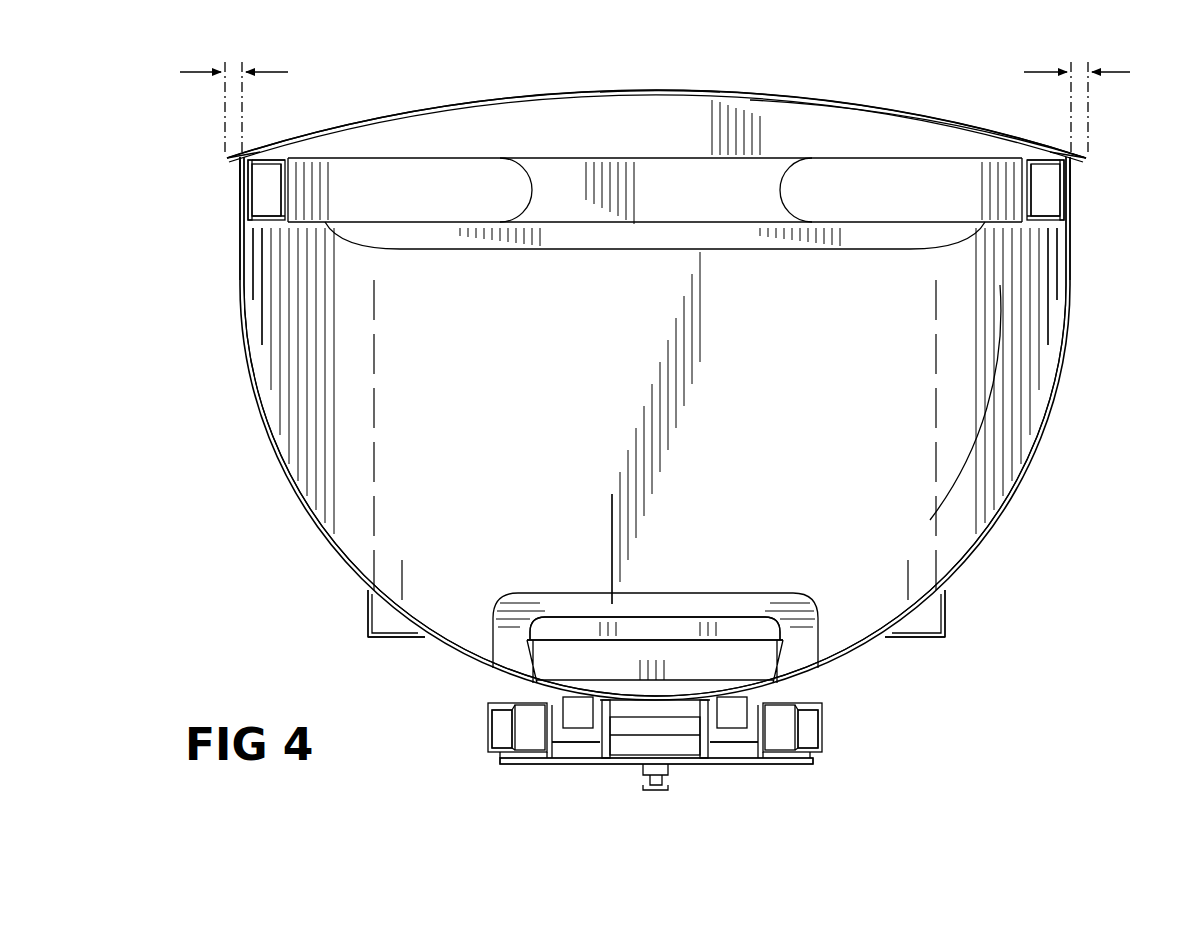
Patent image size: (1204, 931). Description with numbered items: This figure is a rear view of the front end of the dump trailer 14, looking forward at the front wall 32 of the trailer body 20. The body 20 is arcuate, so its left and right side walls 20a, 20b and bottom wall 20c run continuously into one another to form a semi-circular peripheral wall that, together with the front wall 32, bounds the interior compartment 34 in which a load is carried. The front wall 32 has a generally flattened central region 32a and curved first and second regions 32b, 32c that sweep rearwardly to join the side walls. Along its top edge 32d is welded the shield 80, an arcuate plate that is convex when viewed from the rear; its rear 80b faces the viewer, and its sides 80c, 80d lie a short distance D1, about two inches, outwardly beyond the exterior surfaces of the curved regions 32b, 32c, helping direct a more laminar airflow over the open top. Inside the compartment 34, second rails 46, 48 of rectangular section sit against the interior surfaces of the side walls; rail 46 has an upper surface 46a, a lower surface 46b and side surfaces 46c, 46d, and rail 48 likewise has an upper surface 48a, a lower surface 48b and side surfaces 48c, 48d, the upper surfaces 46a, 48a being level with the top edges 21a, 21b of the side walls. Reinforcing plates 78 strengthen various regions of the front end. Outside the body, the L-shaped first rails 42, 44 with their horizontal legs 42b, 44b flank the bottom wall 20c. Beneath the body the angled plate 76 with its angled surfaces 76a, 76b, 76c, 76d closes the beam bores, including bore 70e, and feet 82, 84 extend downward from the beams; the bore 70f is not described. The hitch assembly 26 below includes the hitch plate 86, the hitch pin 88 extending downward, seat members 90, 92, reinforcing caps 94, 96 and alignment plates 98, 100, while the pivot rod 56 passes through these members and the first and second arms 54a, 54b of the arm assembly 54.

The distance D1 is at (656, 107).
The dump trailer 14 is at (232, 402).
The trailer body 20 is at (318, 540).
The left side wall 20a is at (238, 254).
The right side wall 20b is at (1072, 254).
The bottom wall 20c is at (617, 735).
The top edge of left side wall 21a is at (240, 156).
The top edge of right side wall 21b is at (1072, 156).
The hitch assembly 26 is at (502, 766).
The front wall 32 is at (597, 128).
The central region of front wall 32a is at (591, 488).
The curved first region of front wall 32b is at (276, 294).
The curved second region of front wall 32c is at (1036, 294).
The top edge of front wall 32d is at (865, 104).
The interior compartment 34 is at (822, 510).
The first rail 42 is at (366, 602).
The horizontal second leg of first rail 42b is at (392, 640).
The second first rail 44 is at (950, 602).
The horizontal second leg of rail 44 44b is at (920, 640).
The second rail 46 is at (246, 190).
The upper surface of second rail 46 46a is at (282, 158).
The lower surface of second rail 46 46b is at (268, 222).
The first side surface of second rail 46 46c is at (250, 190).
The second side surface of second rail 46 46d is at (288, 186).
The second rail 48 is at (1068, 190).
The upper surface of second rail 48 48a is at (1036, 158).
The lower surface of second rail 48 48b is at (1046, 222).
The first side surface of second rail 48 48c is at (1024, 186).
The second side surface of second rail 48 48d is at (1062, 190).
The arm assembly 54 is at (488, 748).
The first arm 54a is at (500, 730).
The second arm 54b is at (810, 730).
The pivot rod 56 is at (658, 728).
The interior bore of beam 70 70e is at (812, 664).
The housing side 70f is at (500, 664).
The angled plate 76 is at (750, 624).
The angled surface of plate 76a is at (576, 627).
The angled surface of plate 76b is at (548, 648).
The angled surface of plate 76c is at (684, 670).
The angled surface of plate 76d is at (626, 650).
The reinforcing plates 78 is at (478, 176).
The shield 80 is at (420, 104).
The rear of shield 80b is at (658, 92).
The side of shield 80c is at (236, 158).
The side of shield 80d is at (1078, 158).
The U-shaped foot 82 is at (580, 712).
The U-shaped foot 84 is at (732, 712).
The hitch plate 86 is at (722, 770).
The hitch pin 88 is at (656, 790).
The seat member 90 is at (582, 742).
The seat member 92 is at (728, 742).
The reinforcing cap 94 is at (552, 696).
The reinforcing cap 96 is at (758, 696).
The alignment plate 98 is at (608, 758).
The alignment plate 100 is at (708, 764).